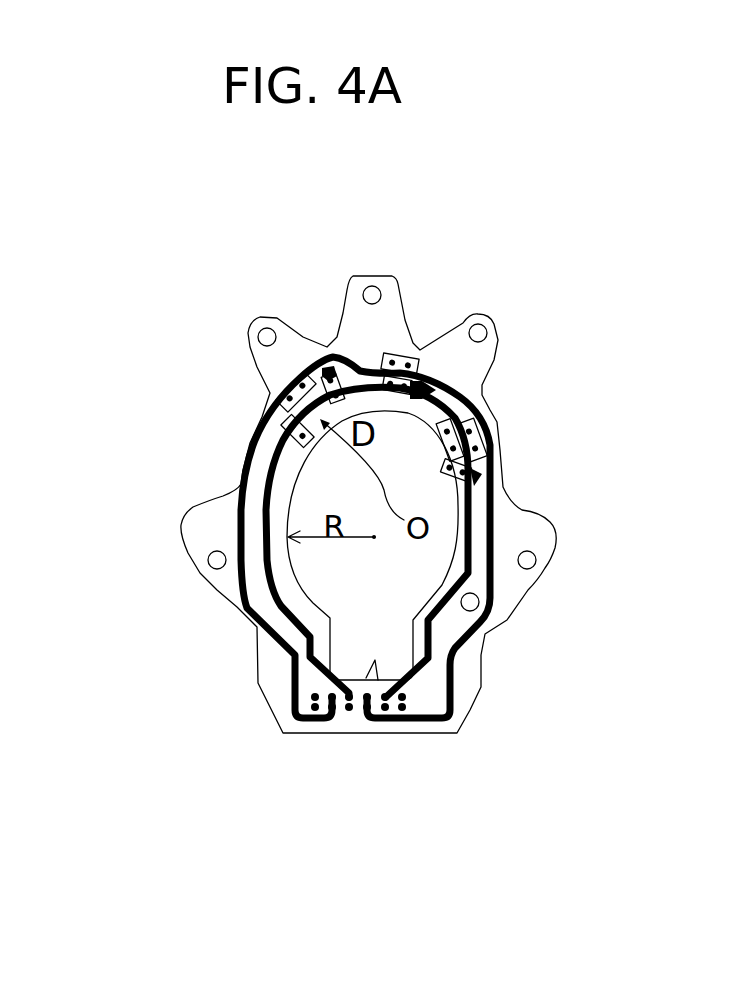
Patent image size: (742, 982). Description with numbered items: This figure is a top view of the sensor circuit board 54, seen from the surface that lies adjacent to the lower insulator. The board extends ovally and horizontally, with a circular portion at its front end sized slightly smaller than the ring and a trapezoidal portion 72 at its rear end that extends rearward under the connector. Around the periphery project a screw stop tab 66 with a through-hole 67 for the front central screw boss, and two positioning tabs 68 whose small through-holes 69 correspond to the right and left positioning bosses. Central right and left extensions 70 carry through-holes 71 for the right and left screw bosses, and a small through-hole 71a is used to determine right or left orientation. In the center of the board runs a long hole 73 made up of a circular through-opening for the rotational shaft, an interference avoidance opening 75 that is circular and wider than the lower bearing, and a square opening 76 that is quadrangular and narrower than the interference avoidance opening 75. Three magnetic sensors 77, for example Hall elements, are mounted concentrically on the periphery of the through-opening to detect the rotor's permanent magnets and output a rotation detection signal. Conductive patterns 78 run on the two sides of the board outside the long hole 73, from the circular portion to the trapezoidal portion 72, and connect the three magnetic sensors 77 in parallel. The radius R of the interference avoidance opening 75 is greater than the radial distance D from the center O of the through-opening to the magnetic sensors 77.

The sensor circuit board 54 is at (522, 278).
The screw stop tab 66 is at (391, 278).
The through-hole 67 is at (365, 276).
The positioning tabs 68 is at (255, 322).
The small through-holes 69 is at (270, 329).
The central right and left extensions 70 is at (187, 511).
The through-holes 71 is at (211, 567).
The small through-hole 71a is at (484, 650).
The trapezoidal portion 72 is at (340, 733).
The long hole 73 is at (466, 516).
The interference avoidance opening 75 is at (466, 578).
The square opening 76 is at (378, 662).
The magnetic sensors 77 is at (418, 356).
The conductive patterns 78 is at (468, 540).